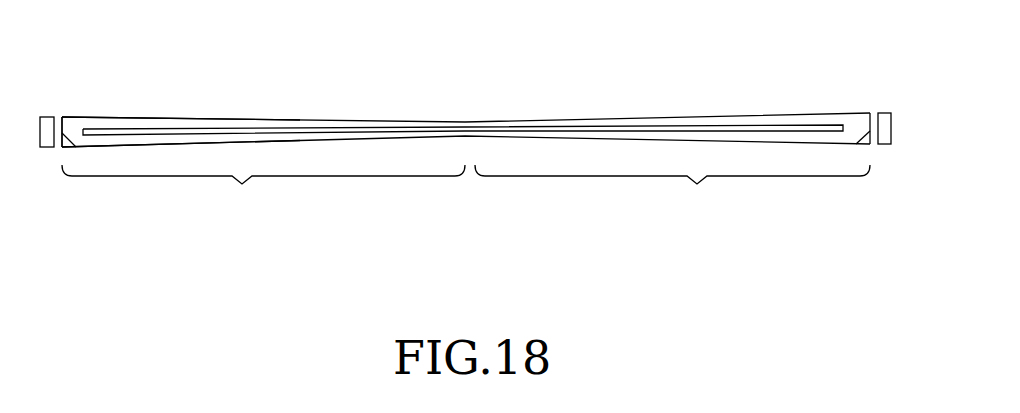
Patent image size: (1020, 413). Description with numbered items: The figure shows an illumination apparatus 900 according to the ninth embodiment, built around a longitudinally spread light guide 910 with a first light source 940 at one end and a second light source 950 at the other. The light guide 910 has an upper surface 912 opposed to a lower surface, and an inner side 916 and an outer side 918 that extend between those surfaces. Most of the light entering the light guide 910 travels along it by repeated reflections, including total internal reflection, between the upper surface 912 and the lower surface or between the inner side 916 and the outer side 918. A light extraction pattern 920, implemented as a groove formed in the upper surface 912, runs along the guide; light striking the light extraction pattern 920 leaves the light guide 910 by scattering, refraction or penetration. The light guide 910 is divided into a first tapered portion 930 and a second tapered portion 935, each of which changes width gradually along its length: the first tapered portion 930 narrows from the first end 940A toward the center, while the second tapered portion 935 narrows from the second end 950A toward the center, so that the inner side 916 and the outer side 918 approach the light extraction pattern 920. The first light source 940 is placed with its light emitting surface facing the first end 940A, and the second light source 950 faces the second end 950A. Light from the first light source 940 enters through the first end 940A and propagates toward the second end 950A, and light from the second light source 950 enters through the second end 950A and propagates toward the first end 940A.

The illumination apparatus 900 is at (465, 137).
The light guide 910 is at (337, 102).
The upper surface 912 is at (72, 117).
The inner side 916 is at (162, 118).
The outer side 918 is at (167, 148).
The light extraction pattern 920 is at (242, 113).
The first tapered portion 930 is at (263, 189).
The second tapered portion 935 is at (672, 188).
The first light source 940 is at (46, 117).
The first end 940A is at (62, 166).
The second light source 950 is at (883, 113).
The second end 950A is at (872, 160).